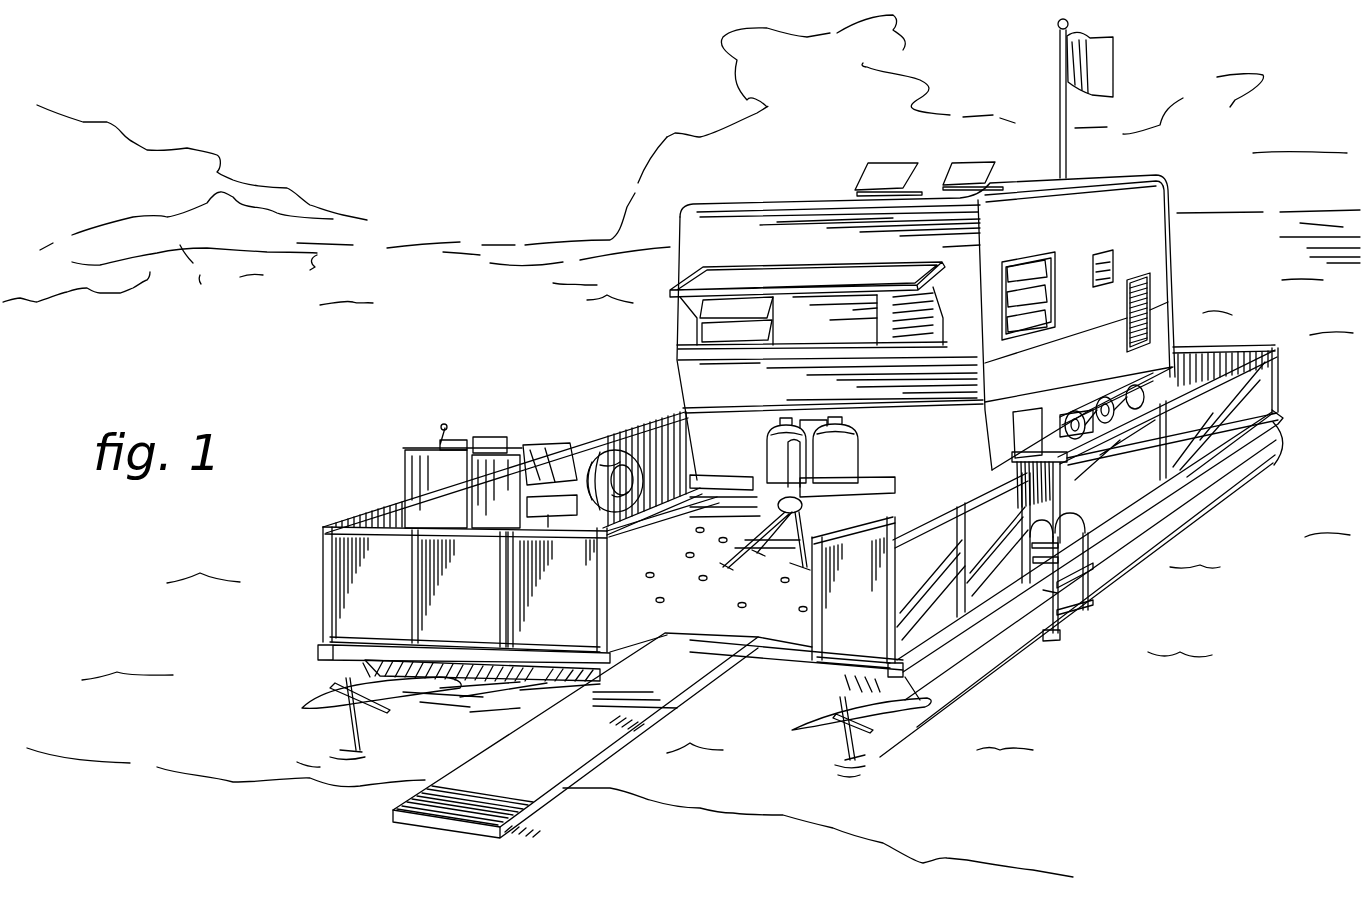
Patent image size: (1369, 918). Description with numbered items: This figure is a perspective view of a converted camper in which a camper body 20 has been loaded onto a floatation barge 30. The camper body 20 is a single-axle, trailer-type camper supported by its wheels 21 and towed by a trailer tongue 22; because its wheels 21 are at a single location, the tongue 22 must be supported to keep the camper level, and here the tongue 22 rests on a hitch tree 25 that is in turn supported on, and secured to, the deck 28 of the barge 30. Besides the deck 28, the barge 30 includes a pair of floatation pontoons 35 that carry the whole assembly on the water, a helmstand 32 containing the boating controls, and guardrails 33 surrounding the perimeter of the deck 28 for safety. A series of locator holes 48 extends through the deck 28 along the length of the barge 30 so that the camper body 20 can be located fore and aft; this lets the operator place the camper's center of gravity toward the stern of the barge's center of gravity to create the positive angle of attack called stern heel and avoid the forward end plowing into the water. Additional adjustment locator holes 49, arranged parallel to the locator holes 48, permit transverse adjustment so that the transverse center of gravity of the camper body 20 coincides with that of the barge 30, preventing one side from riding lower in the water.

The camper body 20 is at (1172, 258).
The wheels 21 is at (1090, 397).
The trailer tongue 22 is at (768, 470).
The hitch tree 25 is at (753, 567).
The deck 28 is at (698, 531).
The floatation barge 30 is at (320, 641).
The helmstand 32 is at (407, 467).
The guardrails 33 is at (650, 443).
The floatation pontoons 35 is at (353, 747).
The locator holes 48 is at (740, 607).
The adjustment locator holes 49 is at (800, 610).